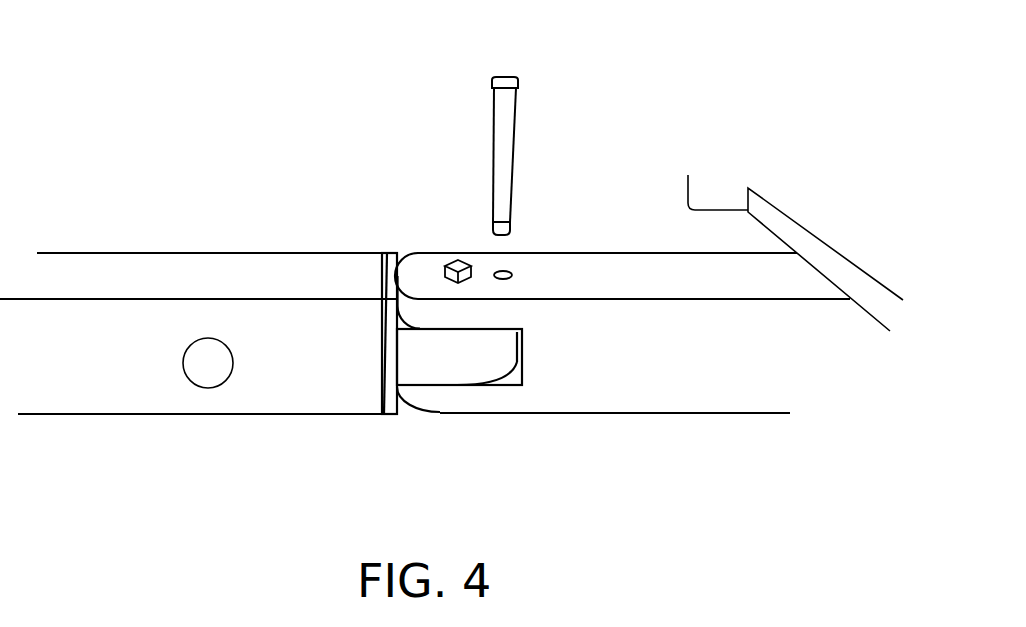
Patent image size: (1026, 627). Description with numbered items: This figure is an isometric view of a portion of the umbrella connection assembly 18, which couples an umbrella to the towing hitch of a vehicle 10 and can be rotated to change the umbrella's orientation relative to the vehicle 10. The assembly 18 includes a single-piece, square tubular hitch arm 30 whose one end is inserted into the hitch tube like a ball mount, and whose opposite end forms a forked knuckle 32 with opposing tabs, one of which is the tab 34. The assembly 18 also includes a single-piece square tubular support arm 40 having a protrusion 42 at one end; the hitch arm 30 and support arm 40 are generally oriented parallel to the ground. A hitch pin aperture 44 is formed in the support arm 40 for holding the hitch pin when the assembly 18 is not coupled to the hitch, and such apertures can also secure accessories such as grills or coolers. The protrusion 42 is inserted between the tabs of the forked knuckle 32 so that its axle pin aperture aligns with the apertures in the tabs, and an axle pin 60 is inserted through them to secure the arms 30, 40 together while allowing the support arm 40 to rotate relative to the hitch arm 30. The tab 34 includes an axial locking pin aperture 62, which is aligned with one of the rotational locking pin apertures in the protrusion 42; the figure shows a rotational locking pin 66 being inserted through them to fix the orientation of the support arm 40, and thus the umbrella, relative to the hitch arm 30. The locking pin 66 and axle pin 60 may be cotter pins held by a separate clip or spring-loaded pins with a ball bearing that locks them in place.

The vehicle 10 is at (722, 198).
The umbrella connection assembly 18 is at (574, 108).
The hitch arm 30 is at (665, 265).
The forked knuckle 32 is at (490, 415).
The tab 34 is at (417, 255).
The support arm 40 is at (248, 263).
The protrusion 42 is at (443, 363).
The hitch pin aperture 44 is at (205, 390).
The axle pin 60 is at (458, 260).
The axial locking pin aperture 62 is at (512, 266).
The rotational locking pin 66 is at (490, 155).